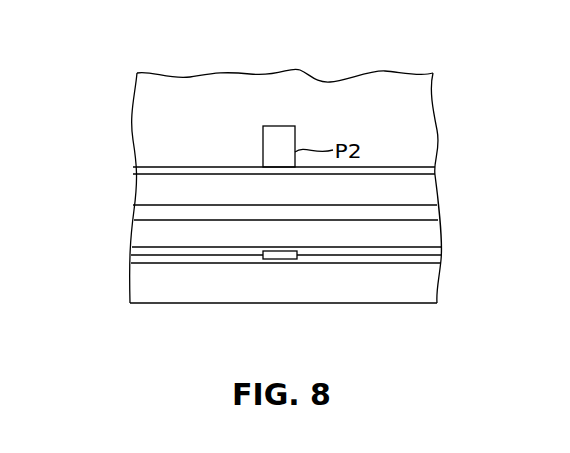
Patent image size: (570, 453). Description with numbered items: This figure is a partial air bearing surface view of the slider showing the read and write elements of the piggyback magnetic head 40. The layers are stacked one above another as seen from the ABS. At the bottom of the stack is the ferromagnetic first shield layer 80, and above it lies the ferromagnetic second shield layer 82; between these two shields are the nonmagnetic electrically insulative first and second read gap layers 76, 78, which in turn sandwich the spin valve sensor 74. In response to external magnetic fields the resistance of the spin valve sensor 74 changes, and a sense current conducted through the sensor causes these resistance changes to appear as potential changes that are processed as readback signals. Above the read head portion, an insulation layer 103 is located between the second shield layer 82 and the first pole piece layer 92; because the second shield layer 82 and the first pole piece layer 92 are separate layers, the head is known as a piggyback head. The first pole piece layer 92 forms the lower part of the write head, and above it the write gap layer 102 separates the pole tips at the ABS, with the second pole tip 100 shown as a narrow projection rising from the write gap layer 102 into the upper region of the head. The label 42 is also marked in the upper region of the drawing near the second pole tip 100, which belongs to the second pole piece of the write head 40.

The piggyback magnetic head 40 is at (453, 87).
The second pole piece layer 42 is at (142, 100).
The second pole tip 100 is at (276, 135).
The write gap layer 102 is at (202, 167).
The first pole piece layer 92 is at (145, 188).
The insulation layer 103 is at (428, 213).
The second shield layer 82 is at (138, 237).
The first read gap layer 76 is at (192, 263).
The spin valve sensor 74 is at (278, 259).
The second read gap layer 78 is at (398, 250).
The first shield layer 80 is at (428, 287).